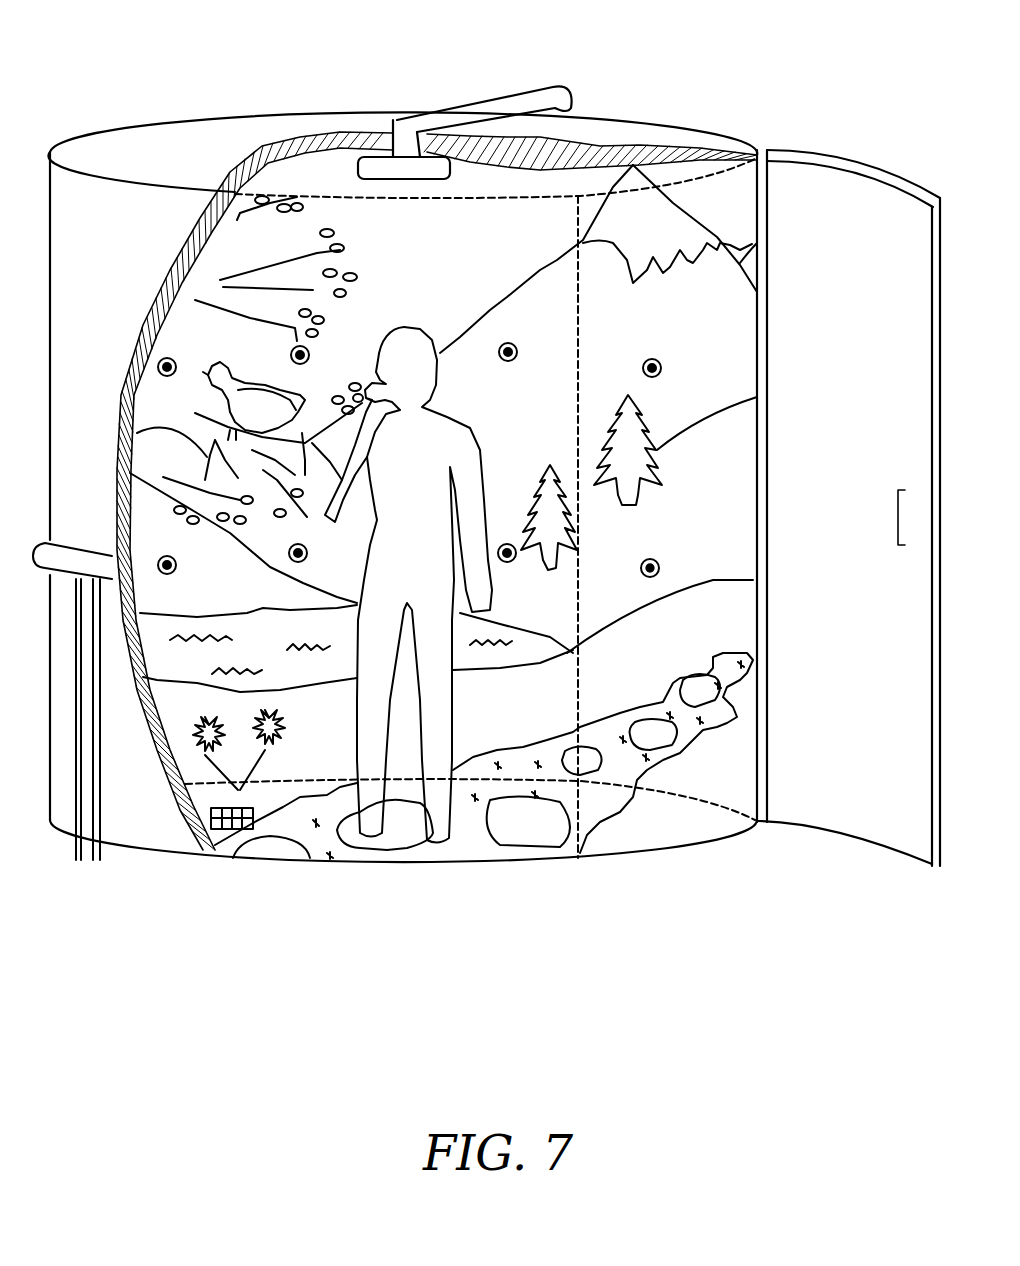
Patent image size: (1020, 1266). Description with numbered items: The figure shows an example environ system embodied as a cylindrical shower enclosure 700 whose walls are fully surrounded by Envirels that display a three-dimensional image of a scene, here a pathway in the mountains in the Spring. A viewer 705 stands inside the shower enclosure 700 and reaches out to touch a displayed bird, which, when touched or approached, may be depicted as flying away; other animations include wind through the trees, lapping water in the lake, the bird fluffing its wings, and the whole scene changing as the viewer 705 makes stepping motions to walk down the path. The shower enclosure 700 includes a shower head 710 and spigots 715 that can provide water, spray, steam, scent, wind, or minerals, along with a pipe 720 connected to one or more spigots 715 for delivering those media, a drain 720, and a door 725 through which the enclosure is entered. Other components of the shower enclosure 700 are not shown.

The shower enclosure 700 is at (153, 143).
The viewer 705 is at (417, 443).
The shower head 710 is at (357, 147).
The spigots 715 is at (652, 578).
The pipe 720 is at (88, 655).
The door 725 is at (838, 232).